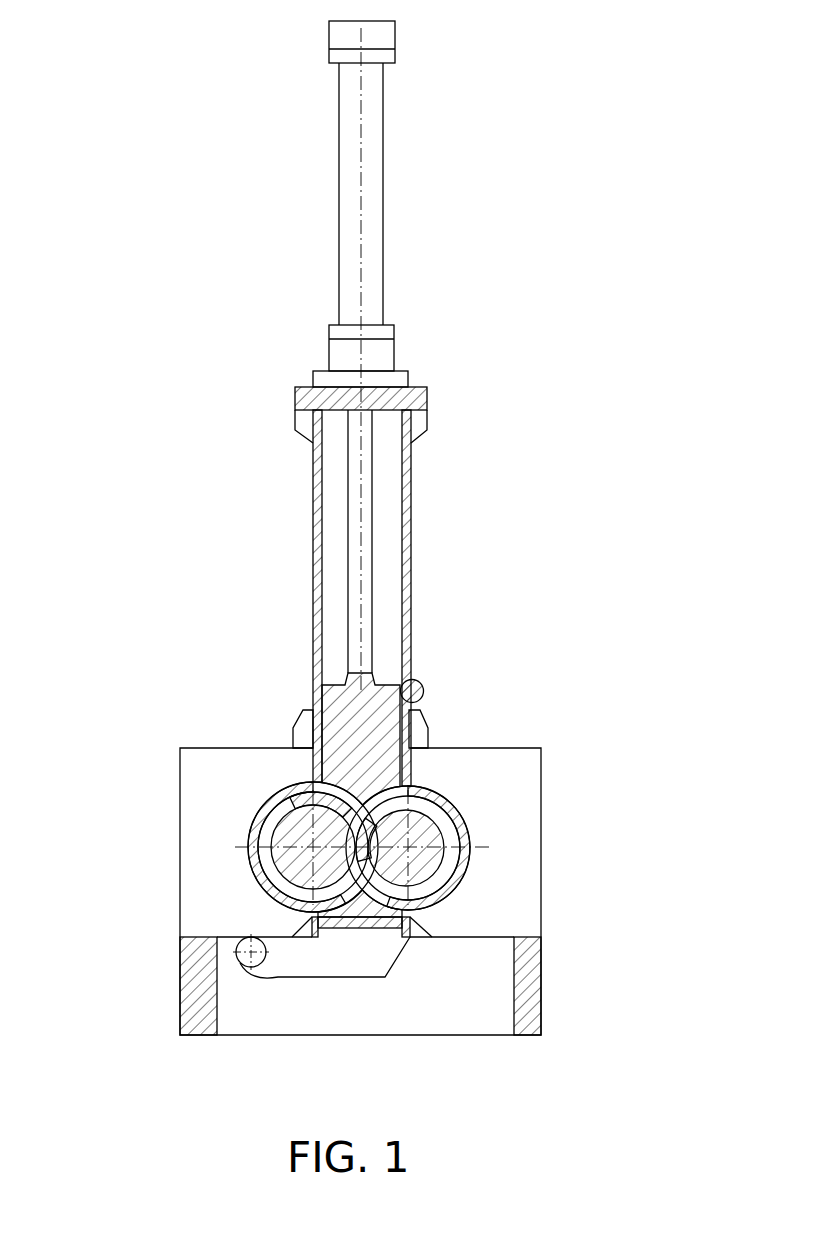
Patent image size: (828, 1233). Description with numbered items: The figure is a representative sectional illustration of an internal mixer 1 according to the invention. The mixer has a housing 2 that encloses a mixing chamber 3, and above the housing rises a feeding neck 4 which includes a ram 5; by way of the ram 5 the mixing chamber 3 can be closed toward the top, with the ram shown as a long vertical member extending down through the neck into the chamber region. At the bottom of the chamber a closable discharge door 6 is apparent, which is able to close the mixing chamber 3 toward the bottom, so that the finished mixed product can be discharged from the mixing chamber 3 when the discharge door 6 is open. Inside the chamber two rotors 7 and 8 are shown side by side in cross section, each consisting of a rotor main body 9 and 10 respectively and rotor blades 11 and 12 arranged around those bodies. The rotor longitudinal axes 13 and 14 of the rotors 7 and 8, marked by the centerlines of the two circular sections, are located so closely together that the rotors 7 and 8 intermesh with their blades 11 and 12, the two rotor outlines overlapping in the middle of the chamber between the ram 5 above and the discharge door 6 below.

The internal mixer 1 is at (240, 393).
The housing 2 is at (506, 768).
The mixing chamber 3 is at (415, 895).
The feeding neck 4 is at (323, 636).
The ram 5 is at (347, 748).
The discharge door 6 is at (365, 903).
The rotor 7 is at (450, 838).
The rotor 8 is at (308, 892).
The rotor main body 9 is at (423, 870).
The rotor main body 10 is at (313, 847).
The rotor blade 11 is at (363, 833).
The rotor blade 12 is at (307, 800).
The rotor longitudinal axis 13 is at (408, 848).
The rotor longitudinal axis 14 is at (296, 859).